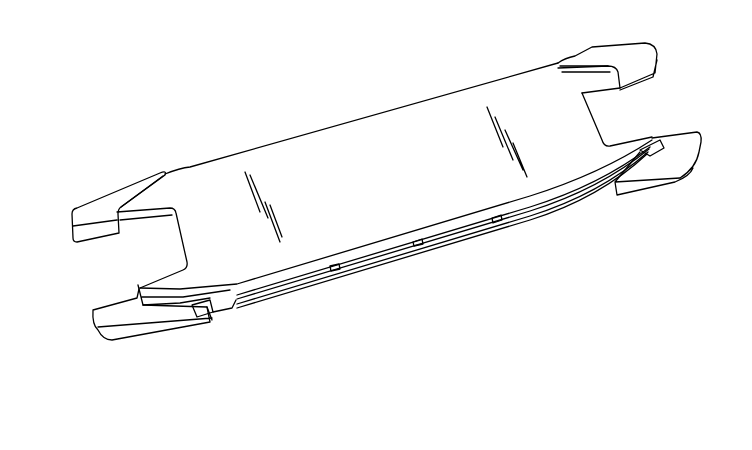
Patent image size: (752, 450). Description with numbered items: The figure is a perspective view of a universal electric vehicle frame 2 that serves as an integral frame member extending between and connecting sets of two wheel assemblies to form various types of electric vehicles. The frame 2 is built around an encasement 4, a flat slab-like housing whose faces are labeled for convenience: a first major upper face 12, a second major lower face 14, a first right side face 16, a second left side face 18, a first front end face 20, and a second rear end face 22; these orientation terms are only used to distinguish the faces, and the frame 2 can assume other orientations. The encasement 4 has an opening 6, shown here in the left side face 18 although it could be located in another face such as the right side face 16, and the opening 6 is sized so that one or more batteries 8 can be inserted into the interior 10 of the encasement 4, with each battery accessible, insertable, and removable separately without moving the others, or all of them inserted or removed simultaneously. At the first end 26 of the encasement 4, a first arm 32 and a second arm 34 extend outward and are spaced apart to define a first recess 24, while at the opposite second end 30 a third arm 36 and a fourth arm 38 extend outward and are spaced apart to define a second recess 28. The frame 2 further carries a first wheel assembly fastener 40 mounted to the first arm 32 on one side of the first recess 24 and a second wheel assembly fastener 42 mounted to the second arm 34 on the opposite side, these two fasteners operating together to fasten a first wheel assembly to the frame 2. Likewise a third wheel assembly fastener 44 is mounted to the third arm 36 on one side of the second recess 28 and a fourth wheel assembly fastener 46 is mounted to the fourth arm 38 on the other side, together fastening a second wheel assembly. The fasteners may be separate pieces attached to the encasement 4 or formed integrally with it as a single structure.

The universal electric vehicle frame 2 is at (128, 100).
The encasement 4 is at (443, 118).
The opening 6 is at (578, 208).
The batteries 8 is at (535, 212).
The interior 10 is at (242, 309).
The first major (upper) face 12 is at (397, 162).
The second major (lower) face 14 is at (545, 224).
The first (right) side face 16 is at (312, 132).
The second (left) side face 18 is at (225, 308).
The first end (front) face 20 is at (176, 262).
The second end (rear) face 22 is at (605, 130).
The first recess 24 is at (155, 250).
The first end 26 is at (200, 232).
The second recess 28 is at (597, 111).
The second end 30 is at (560, 101).
The first arm 32 is at (153, 200).
The second arm 34 is at (172, 285).
The third arm 36 is at (593, 80).
The fourth arm 38 is at (623, 150).
The first wheel assembly fastener 40 is at (102, 202).
The second wheel assembly fastener 42 is at (135, 315).
The third wheel assembly fastener 44 is at (623, 53).
The fourth wheel assembly fastener 46 is at (675, 150).